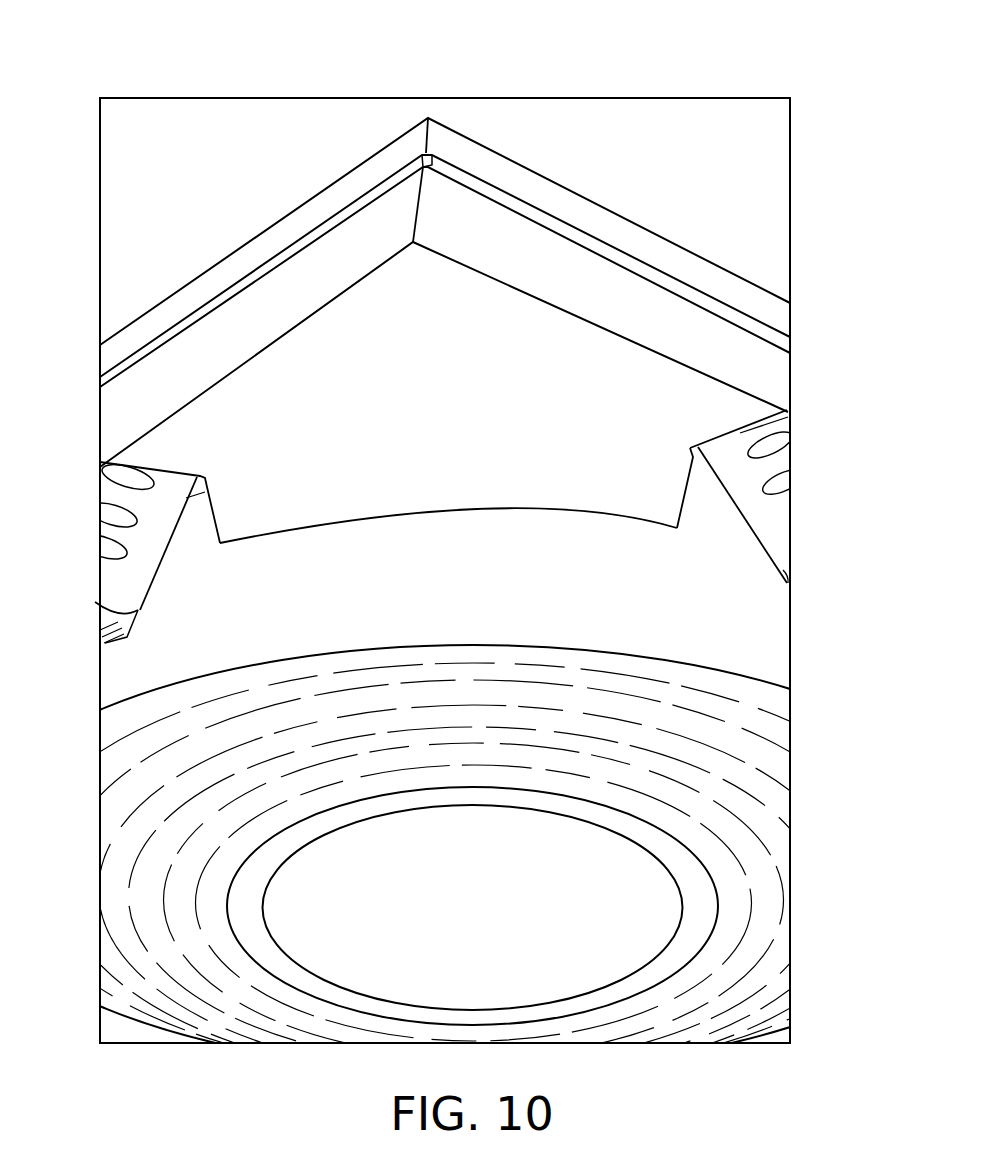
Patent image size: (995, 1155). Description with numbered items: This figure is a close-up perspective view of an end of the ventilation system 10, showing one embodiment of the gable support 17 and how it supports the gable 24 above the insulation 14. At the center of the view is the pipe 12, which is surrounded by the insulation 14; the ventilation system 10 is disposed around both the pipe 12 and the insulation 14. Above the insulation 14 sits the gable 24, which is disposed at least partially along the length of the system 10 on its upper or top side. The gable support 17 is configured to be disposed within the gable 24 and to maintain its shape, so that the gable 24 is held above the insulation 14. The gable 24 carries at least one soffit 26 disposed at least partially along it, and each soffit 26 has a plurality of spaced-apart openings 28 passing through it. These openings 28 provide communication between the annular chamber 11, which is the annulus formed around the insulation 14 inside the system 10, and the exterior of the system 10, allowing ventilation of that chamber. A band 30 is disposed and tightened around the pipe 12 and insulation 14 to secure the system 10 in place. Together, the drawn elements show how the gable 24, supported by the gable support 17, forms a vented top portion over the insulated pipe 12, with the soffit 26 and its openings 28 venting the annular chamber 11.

The ventilation system 10 is at (298, 78).
The gable 24 is at (462, 152).
The band 30 is at (533, 215).
The gable support 17 is at (556, 407).
The soffit 26 is at (118, 577).
The spaced-apart openings 28 is at (118, 513).
The annular chamber 11 is at (148, 668).
The insulation 14 is at (750, 712).
The pipe 12 is at (245, 907).